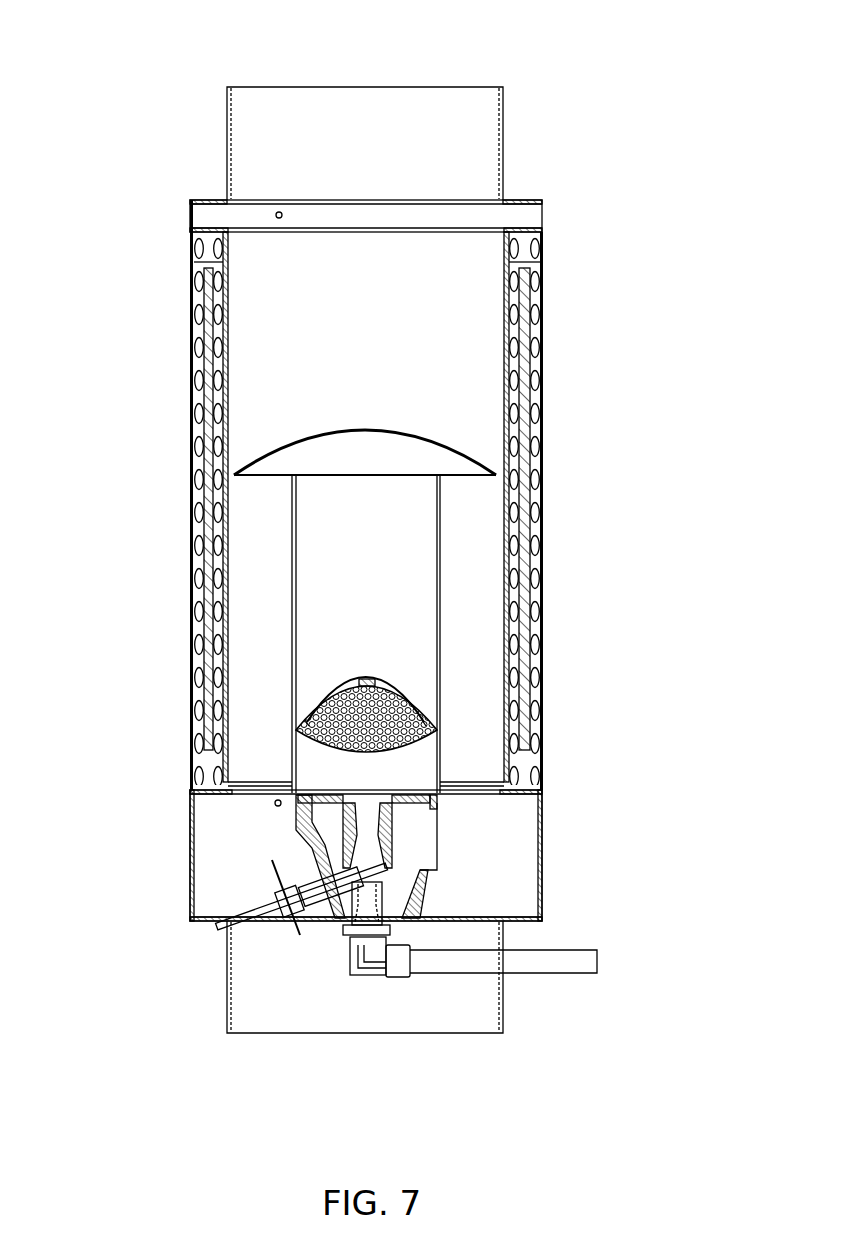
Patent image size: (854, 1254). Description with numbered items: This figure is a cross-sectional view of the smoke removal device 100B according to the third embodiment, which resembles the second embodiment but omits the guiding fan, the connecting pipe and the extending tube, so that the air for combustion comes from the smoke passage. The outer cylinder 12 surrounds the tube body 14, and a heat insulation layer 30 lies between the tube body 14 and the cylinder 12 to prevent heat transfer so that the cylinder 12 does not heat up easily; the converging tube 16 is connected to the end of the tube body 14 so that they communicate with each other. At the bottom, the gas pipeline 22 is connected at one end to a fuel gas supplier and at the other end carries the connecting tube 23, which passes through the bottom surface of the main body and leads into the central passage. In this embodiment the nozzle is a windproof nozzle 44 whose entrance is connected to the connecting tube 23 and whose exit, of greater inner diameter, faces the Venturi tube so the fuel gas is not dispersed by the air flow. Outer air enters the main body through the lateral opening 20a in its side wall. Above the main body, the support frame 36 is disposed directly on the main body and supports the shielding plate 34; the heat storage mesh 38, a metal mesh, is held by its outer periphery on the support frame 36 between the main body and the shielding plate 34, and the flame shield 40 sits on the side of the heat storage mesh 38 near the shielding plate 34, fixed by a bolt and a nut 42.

The smoke removal device 100B is at (165, 160).
The cylinder 12 is at (548, 318).
The tube body 14 is at (505, 340).
The converging tube 16 is at (548, 265).
The heat insulation layer 30 is at (525, 493).
The shielding plate 34 is at (275, 455).
The support frame 36 is at (292, 522).
The heat storage mesh 38 is at (432, 707).
The flame shield 40 is at (400, 692).
The nut 42 is at (367, 679).
The lateral opening 20a is at (438, 830).
The windproof nozzle 44 is at (385, 893).
The connecting tube 23 is at (364, 977).
The gas pipeline 22 is at (568, 975).